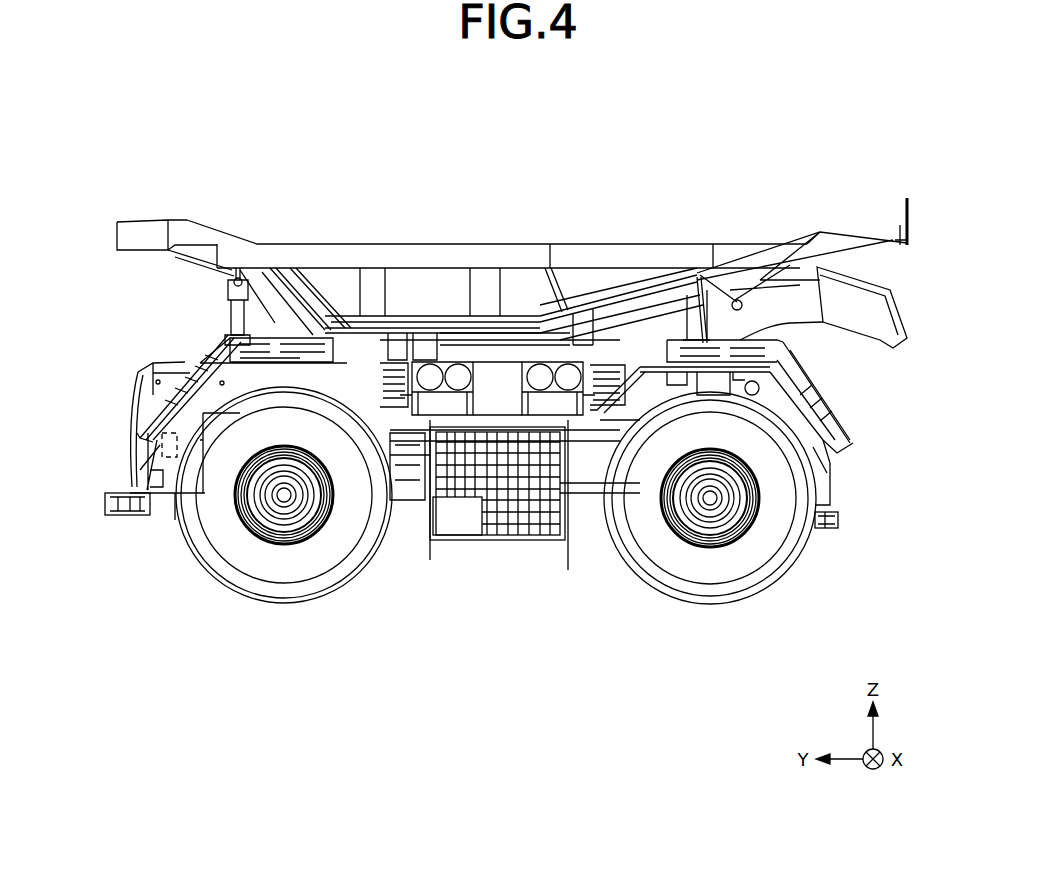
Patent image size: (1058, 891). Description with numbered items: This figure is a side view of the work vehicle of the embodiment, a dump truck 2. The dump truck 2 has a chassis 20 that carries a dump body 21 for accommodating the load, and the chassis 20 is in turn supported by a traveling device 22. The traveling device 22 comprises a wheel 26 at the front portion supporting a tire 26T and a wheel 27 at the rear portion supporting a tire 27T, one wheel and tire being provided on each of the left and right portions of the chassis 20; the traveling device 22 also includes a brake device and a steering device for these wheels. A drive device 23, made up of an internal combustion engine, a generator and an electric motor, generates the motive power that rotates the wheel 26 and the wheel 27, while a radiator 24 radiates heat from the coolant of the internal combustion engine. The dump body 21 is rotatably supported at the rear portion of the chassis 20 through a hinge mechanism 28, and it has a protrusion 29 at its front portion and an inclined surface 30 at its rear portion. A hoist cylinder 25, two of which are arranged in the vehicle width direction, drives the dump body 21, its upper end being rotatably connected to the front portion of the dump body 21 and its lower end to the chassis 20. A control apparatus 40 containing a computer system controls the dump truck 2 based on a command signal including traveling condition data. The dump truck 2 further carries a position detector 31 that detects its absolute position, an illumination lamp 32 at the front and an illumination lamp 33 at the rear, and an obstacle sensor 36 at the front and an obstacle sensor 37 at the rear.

The dump truck 2 is at (786, 146).
The chassis 20 is at (150, 522).
The dump body 21 is at (588, 245).
The traveling device 22 is at (826, 492).
The drive device 23 is at (425, 430).
The radiator 24 is at (510, 555).
The hoist cylinder 25 is at (228, 322).
The wheel 26 is at (258, 535).
The tire 26T is at (200, 545).
The wheel 27 is at (725, 540).
The tire 27T is at (778, 568).
The hinge mechanism 28 is at (760, 390).
The protrusion 29 is at (138, 218).
The inclined surface 30 is at (868, 275).
The position detector 31 is at (912, 222).
The illumination lamp 32 is at (157, 420).
The illumination lamp 33 is at (838, 422).
The obstacle sensor 36 is at (105, 503).
The obstacle sensor 37 is at (838, 520).
The control apparatus 40 is at (150, 450).